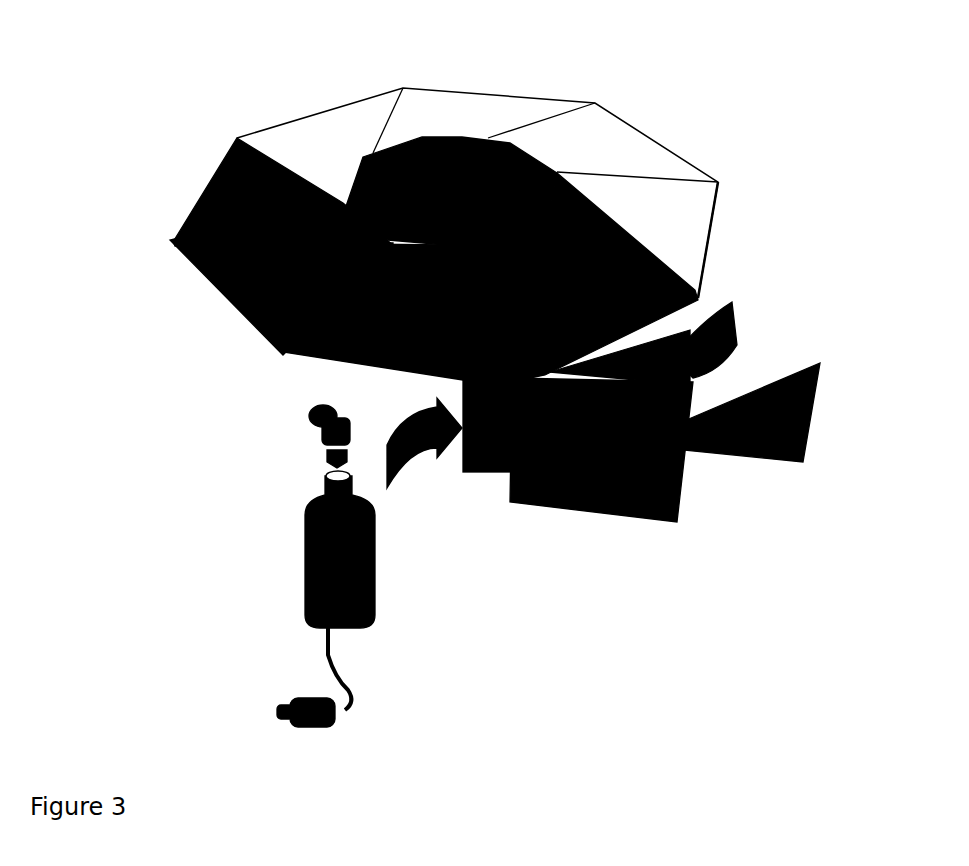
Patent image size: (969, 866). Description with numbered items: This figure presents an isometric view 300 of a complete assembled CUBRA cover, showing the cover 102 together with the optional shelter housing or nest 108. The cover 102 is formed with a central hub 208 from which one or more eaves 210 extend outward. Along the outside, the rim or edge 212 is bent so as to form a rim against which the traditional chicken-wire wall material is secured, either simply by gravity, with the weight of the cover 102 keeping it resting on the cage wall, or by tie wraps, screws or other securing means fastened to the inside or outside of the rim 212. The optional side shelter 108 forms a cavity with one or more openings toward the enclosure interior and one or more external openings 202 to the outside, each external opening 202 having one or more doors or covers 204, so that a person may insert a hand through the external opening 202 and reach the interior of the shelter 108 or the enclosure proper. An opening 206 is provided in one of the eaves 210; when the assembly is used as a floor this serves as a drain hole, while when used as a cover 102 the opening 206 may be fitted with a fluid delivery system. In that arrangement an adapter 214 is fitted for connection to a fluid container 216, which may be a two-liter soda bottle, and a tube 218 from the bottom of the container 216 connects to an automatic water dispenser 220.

The isometric view 300 is at (720, 88).
The cover 102 is at (233, 197).
The central hub 208 is at (440, 157).
The eave 210 is at (232, 255).
The rim or edge 212 is at (225, 298).
The external opening 202 is at (674, 356).
The door or cover 204 is at (775, 460).
The opening 206 is at (490, 473).
The shelter housing or nest 108 is at (582, 505).
The adapter 214 is at (325, 433).
The fluid container 216 is at (307, 558).
The tube 218 is at (323, 653).
The automatic water dispenser 220 is at (280, 707).